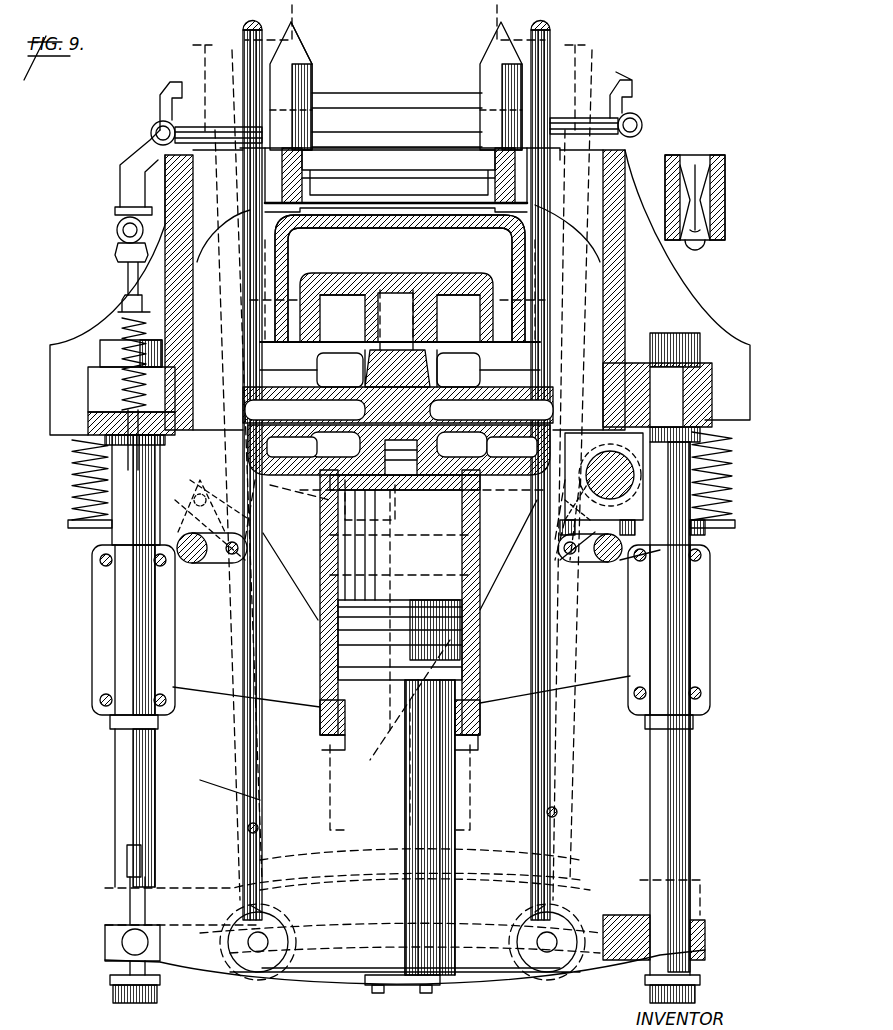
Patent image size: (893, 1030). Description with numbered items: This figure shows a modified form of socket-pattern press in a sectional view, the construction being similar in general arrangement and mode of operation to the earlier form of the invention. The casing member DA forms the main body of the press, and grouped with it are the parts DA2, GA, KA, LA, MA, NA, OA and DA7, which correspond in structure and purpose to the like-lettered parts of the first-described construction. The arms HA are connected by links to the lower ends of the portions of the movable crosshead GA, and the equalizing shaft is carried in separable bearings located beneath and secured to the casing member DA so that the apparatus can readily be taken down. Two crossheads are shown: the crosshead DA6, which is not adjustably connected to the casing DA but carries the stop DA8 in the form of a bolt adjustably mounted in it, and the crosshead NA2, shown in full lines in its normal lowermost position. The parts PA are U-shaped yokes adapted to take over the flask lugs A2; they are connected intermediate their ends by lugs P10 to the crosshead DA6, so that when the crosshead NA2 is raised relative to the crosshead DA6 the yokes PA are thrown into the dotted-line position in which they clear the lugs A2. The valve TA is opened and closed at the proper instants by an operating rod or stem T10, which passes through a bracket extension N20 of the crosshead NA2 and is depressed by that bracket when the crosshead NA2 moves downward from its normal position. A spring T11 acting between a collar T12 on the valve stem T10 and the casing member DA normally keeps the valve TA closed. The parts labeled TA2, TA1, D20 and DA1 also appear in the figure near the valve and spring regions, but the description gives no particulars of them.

The flask lug A2 is at (243, 52).
The press member DA2 is at (490, 78).
The pipe hook TA2 is at (625, 86).
The pipe arm TA1 is at (605, 118).
The valve TA is at (118, 222).
The movable crosshead GA is at (288, 252).
The press member KA is at (472, 285).
The press member OA is at (380, 318).
The press member LA is at (485, 387).
The casing member DA is at (612, 292).
The collar T12 is at (128, 300).
The spring T11 is at (125, 382).
The operating rod or stem T10 is at (130, 420).
The coil spring D20 is at (115, 445).
The guide rod DA1 is at (112, 520).
The stop DA8 is at (212, 515).
The arm HA is at (622, 478).
The press member DA7 is at (706, 532).
The lug P10 is at (212, 563).
The crosshead DA6 is at (206, 710).
The press member MA is at (465, 640).
The press member NA is at (338, 645).
The U-shaped yoke PA is at (252, 780).
The bracket extension N20 is at (122, 945).
The crosshead NA2 is at (262, 962).